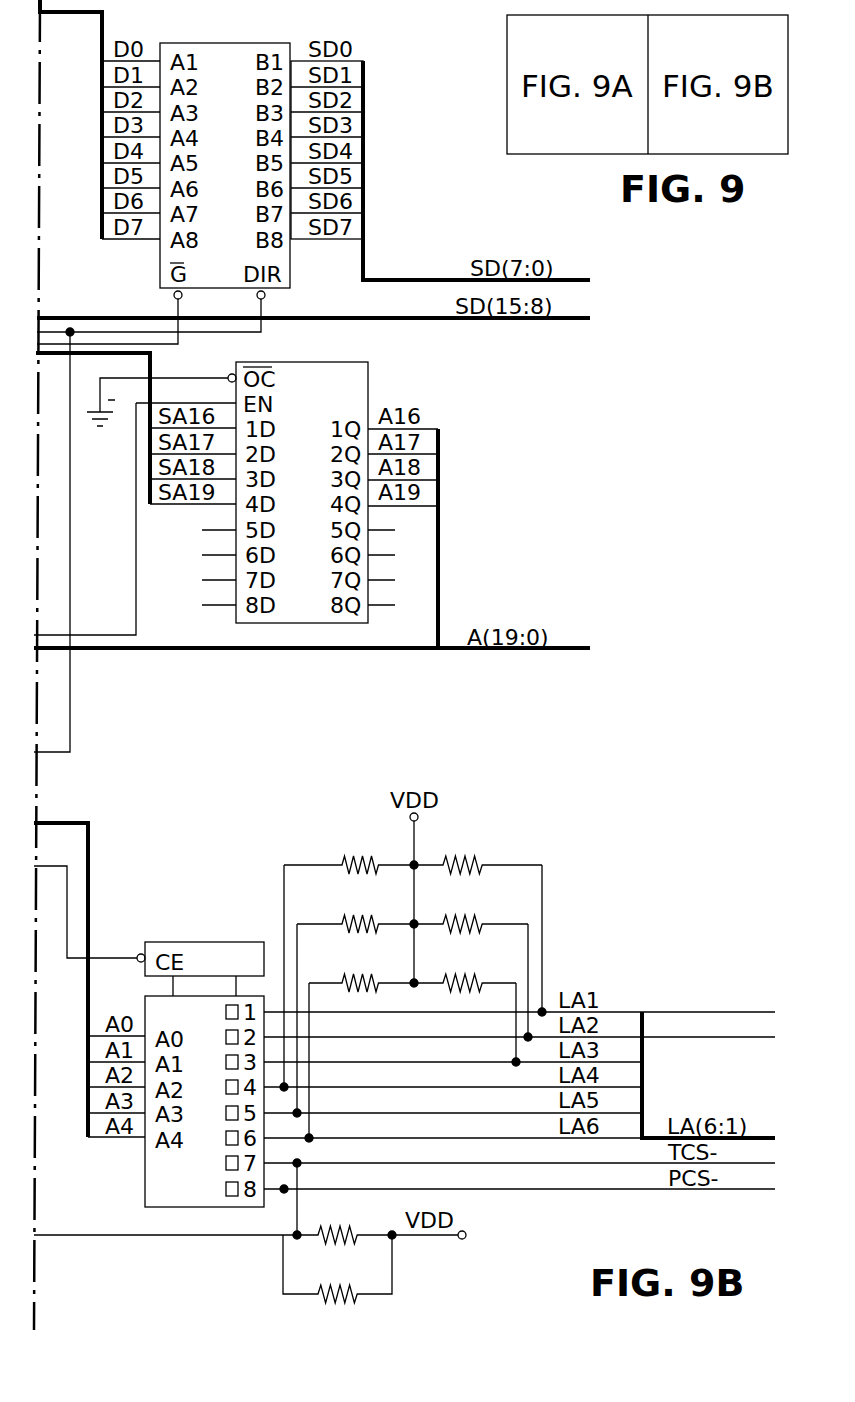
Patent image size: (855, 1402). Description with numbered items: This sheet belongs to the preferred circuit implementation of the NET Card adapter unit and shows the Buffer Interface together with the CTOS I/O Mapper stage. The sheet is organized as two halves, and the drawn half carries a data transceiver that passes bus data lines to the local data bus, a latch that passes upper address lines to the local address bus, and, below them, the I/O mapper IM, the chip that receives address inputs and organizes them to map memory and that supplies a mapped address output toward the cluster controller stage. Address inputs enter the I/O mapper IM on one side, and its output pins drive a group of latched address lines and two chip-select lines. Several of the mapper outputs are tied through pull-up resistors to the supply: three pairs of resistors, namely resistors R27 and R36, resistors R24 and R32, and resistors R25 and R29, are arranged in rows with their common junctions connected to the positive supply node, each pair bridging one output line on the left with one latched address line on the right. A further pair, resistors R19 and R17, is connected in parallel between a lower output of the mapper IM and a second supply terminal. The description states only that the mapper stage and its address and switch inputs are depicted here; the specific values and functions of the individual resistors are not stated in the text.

The pull-up resistor R27 is at (349, 849).
The pull-up resistor R36 is at (478, 849).
The pull-up resistor R24 is at (355, 908).
The pull-up resistor R32 is at (471, 908).
The pull-up resistor R25 is at (361, 967).
The pull-up resistor R29 is at (465, 967).
The resistor R19 is at (246, 1219).
The resistor R17 is at (337, 1269).
The I/O mapper IM is at (155, 1182).